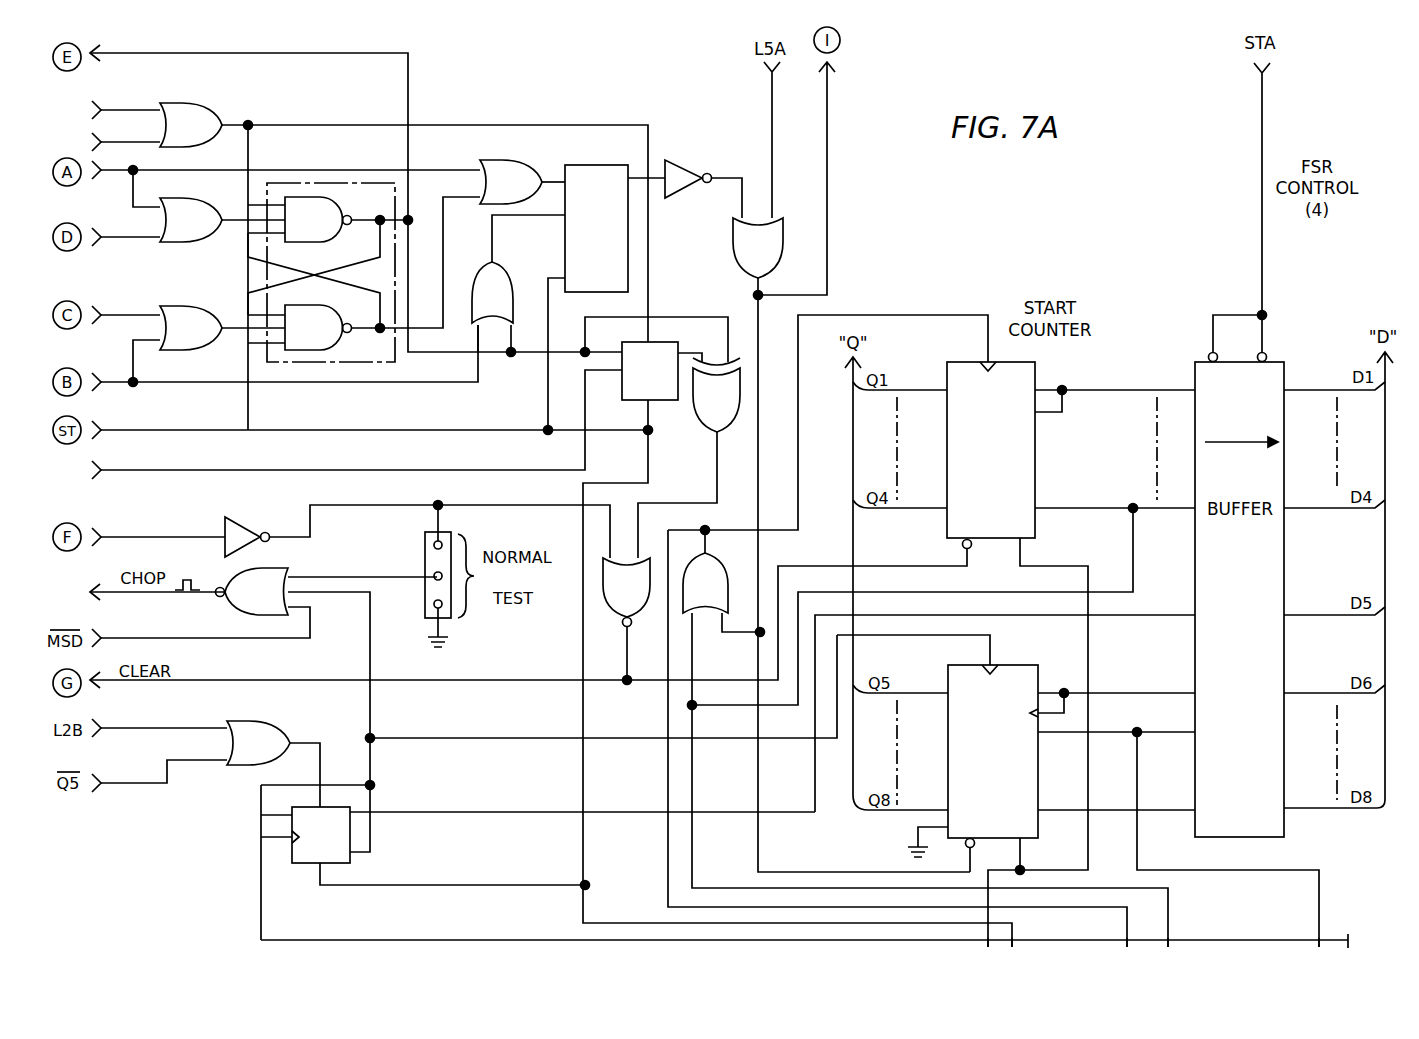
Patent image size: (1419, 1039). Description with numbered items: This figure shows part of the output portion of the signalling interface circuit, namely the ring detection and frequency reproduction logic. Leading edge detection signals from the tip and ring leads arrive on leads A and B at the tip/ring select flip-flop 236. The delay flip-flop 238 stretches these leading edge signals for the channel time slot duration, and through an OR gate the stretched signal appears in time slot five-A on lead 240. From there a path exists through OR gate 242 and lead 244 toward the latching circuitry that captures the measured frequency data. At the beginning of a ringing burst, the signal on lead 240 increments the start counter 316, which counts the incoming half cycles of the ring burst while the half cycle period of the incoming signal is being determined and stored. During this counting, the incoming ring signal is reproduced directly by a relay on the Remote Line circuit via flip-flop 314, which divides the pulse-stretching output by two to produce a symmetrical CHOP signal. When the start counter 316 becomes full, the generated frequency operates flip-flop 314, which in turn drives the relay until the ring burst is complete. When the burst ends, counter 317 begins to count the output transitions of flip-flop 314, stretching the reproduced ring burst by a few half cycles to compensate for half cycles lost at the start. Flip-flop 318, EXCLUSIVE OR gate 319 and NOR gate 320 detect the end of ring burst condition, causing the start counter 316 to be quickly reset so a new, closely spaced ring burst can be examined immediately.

The tip/ring select flip-flop 236 is at (305, 180).
The delay flip-flop 238 is at (583, 172).
The lead 240 is at (766, 330).
The OR gate 242 is at (733, 564).
The lead 244 is at (1042, 912).
The flip-flop 314 is at (303, 868).
The start counter 316 is at (1040, 492).
The counter 317 is at (1038, 800).
The flip-flop 318 is at (662, 340).
The EXCLUSIVE OR gate 319 is at (693, 440).
The NOR gate 320 is at (648, 553).